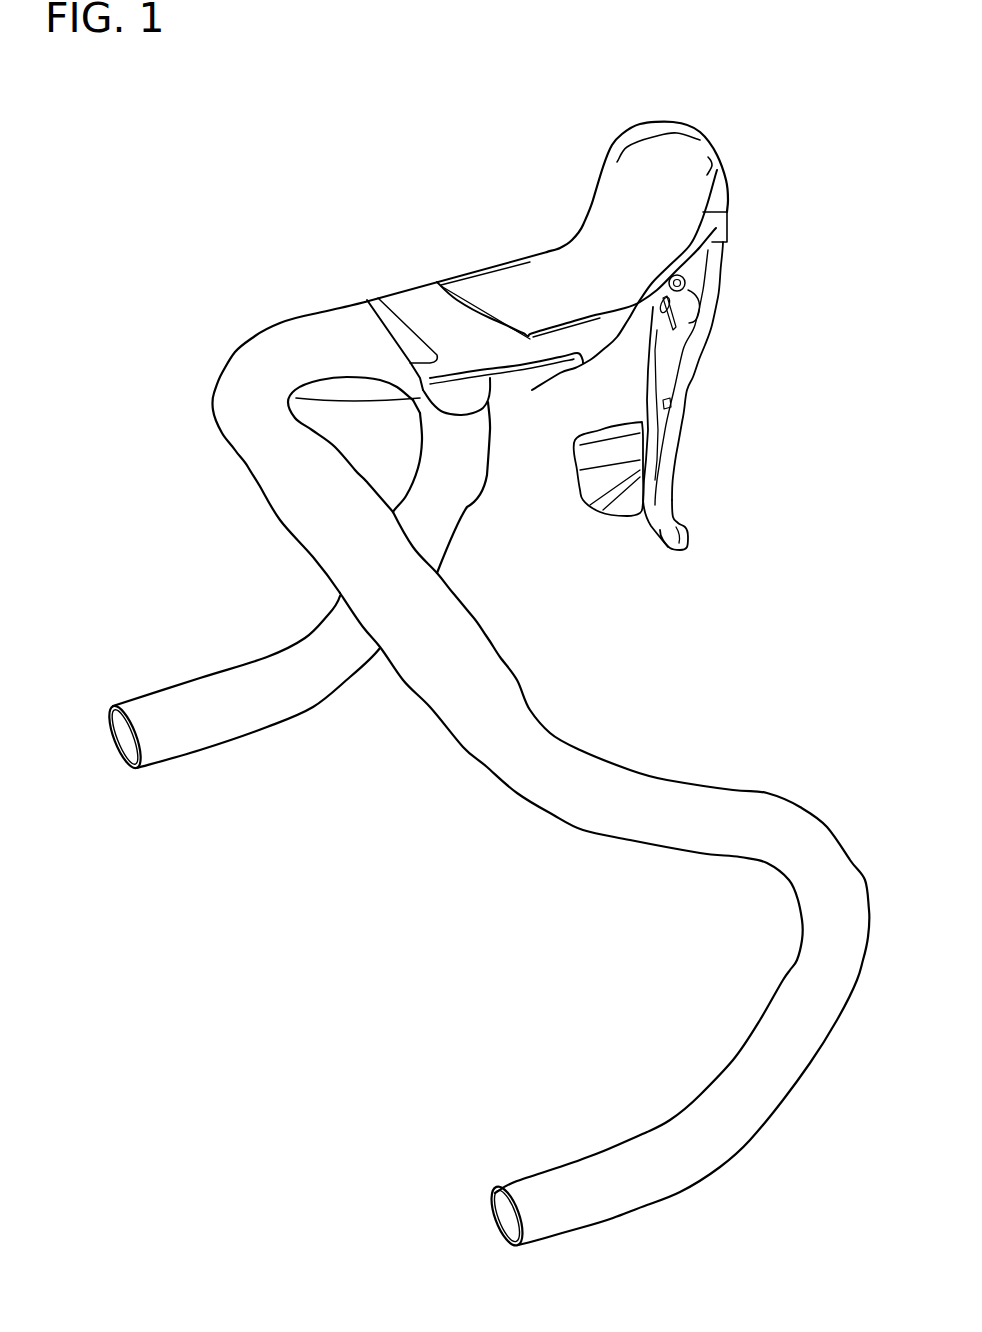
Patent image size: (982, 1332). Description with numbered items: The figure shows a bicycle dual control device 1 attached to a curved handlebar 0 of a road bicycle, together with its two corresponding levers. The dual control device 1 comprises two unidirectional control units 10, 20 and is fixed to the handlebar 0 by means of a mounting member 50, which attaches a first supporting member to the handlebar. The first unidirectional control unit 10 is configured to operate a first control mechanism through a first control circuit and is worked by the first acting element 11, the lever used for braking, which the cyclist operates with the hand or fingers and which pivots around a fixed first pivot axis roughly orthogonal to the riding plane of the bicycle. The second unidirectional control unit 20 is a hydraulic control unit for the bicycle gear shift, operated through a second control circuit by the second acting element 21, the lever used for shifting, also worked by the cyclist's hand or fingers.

The curved handlebar 0 is at (447, 688).
The bicycle dual control device 1 is at (565, 282).
The first unidirectional control unit 10 is at (600, 128).
The first acting element 11 is at (676, 511).
The second unidirectional control unit 20 is at (712, 371).
The second acting element 21 is at (587, 500).
The mounting member 50 is at (302, 388).